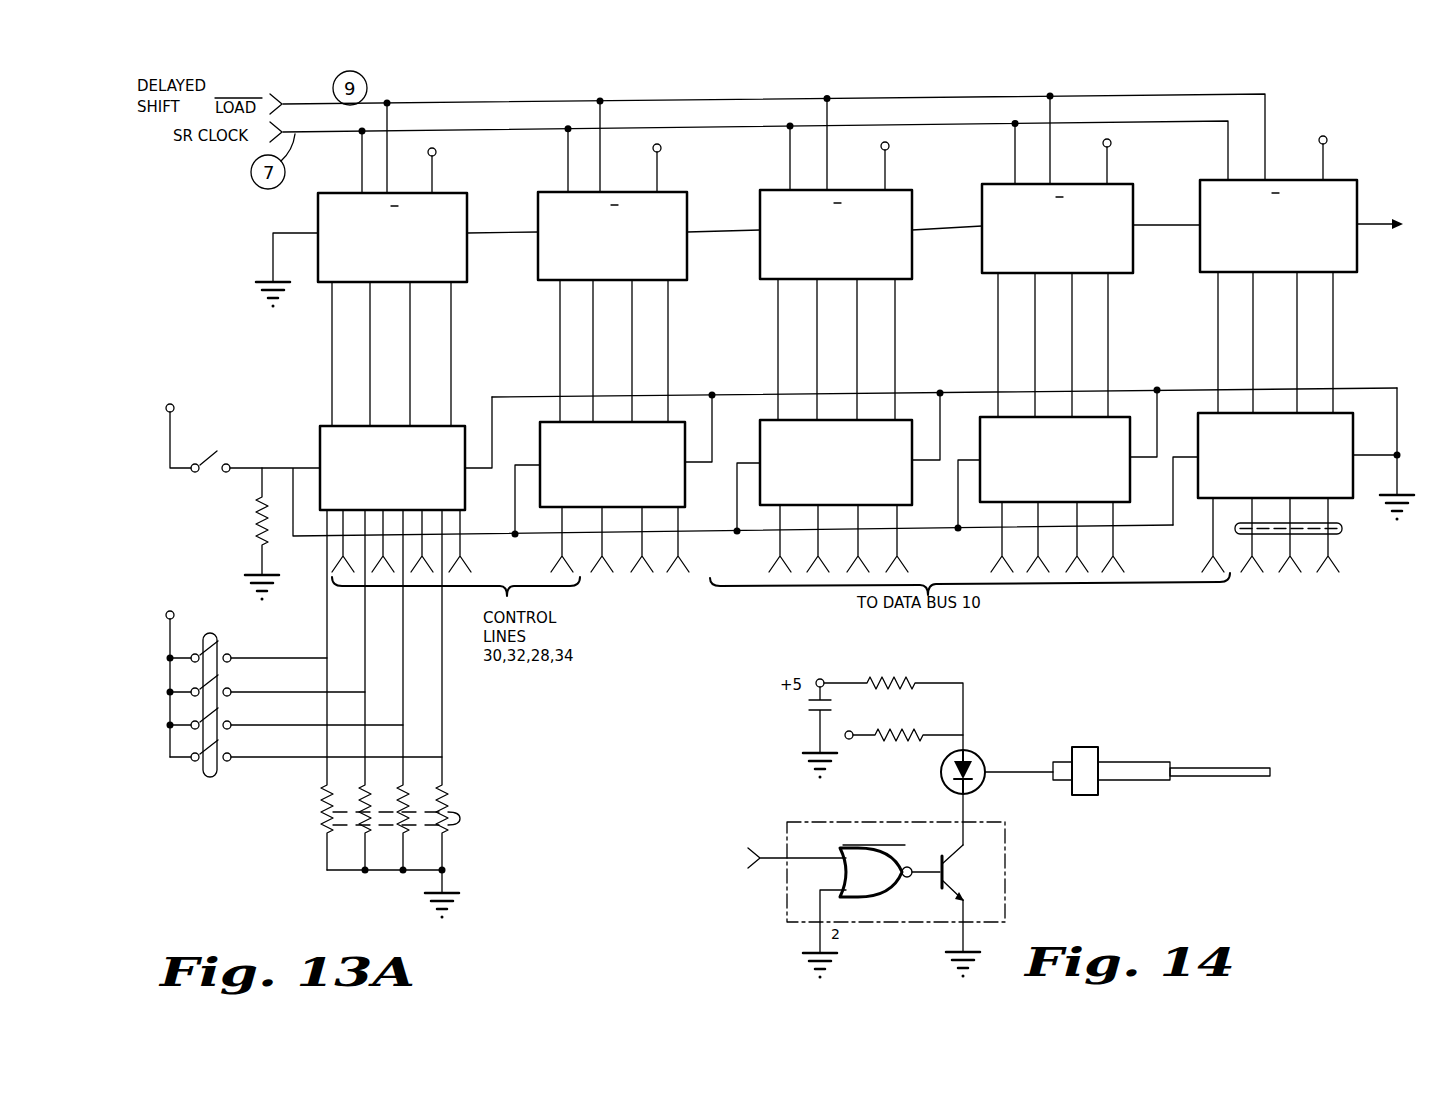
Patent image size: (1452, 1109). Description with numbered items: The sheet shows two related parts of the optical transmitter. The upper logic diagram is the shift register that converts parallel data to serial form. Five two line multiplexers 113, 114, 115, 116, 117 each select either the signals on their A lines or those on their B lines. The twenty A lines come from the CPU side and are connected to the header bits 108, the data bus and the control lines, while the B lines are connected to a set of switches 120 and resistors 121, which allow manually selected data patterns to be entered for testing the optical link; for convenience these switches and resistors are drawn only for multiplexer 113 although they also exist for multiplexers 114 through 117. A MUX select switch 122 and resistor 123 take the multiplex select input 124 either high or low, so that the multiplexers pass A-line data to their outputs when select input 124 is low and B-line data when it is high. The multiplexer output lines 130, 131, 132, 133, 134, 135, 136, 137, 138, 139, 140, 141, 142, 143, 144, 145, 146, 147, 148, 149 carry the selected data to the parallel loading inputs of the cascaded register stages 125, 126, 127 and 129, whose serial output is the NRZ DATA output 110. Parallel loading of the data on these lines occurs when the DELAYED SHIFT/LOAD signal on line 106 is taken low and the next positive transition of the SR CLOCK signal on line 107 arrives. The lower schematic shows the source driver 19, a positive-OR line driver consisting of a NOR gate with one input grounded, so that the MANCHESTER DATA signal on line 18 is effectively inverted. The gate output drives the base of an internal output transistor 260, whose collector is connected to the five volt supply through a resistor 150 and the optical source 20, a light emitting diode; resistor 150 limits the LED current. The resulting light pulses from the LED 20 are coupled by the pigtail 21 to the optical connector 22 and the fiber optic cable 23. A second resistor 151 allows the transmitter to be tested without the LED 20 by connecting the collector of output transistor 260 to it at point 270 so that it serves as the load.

In FIG. 13A, the DELAYED SHIFT/LOAD signal line 106 is at (298, 107).
In FIG. 13A, the SR CLOCK signal line 107 is at (298, 135).
In FIG. 13A, the first 74S195 shift register 125 is at (433, 191).
In FIG. 13A, the second 74S195 shift register 126 is at (658, 190).
In FIG. 13A, the third 74S195 shift register 127 is at (886, 188).
In FIG. 13A, the switches 120 is at (1108, 182).
In FIG. 13A, the fifth 74S195 shift register 129 is at (1324, 178).
In FIG. 13A, the NRZ data output 110 is at (1400, 231).
In FIG. 13A, the multiplexer output line 130 is at (332, 311).
In FIG. 13A, the multiplexer output line 131 is at (369, 345).
In FIG. 13A, the multiplexer output line 132 is at (411, 332).
In FIG. 13A, the multiplexer output line 133 is at (452, 374).
In FIG. 13A, the multiplexer output line 134 is at (560, 309).
In FIG. 13A, the multiplexer output line 135 is at (593, 343).
In FIG. 13A, the multiplexer output line 136 is at (633, 330).
In FIG. 13A, the multiplexer output line 137 is at (669, 372).
In FIG. 13A, the multiplexer output line 138 is at (778, 309).
In FIG. 13A, the multiplexer output line 139 is at (817, 343).
In FIG. 13A, the multiplexer output line 140 is at (858, 330).
In FIG. 13A, the multiplexer output line 141 is at (896, 372).
In FIG. 13A, the multiplexer output line 142 is at (998, 302).
In FIG. 13A, the multiplexer output line 143 is at (1035, 337).
In FIG. 13A, the multiplexer output line 144 is at (1073, 324).
In FIG. 13A, the multiplexer output line 145 is at (1109, 366).
In FIG. 13A, the multiplexer output line 146 is at (1218, 302).
In FIG. 13A, the multiplexer output line 147 is at (1253, 335).
In FIG. 13A, the multiplexer output line 148 is at (1298, 322).
In FIG. 13A, the multiplexer output line 149 is at (1334, 364).
In FIG. 13A, the two line multiplexer 113 is at (463, 499).
In FIG. 13A, the two line multiplexer 114 is at (683, 496).
In FIG. 13A, the two line multiplexer 115 is at (909, 494).
In FIG. 13A, the two line multiplexer 116 is at (1128, 491).
In FIG. 13A, the two line multiplexer 117 is at (1353, 486).
In FIG. 13A, the header bits 108 is at (1342, 530).
In FIG. 13A, the MUX select switch 122 is at (217, 452).
In FIG. 13A, the resistor 123 is at (268, 541).
In FIG. 13A, the multiplex select input 124 is at (311, 468).
In FIG. 13A, the resistors 121 is at (320, 816).
In FIG. 14, the resistor 150 is at (889, 683).
In FIG. 14, the resistor 151 is at (886, 735).
In FIG. 14, the point 270 is at (852, 739).
In FIG. 14, the optical source 20 is at (948, 786).
In FIG. 14, the pigtail 21 is at (1030, 770).
In FIG. 14, the optical connector 22 is at (1085, 747).
In FIG. 14, the fiber optic cable 23 is at (1187, 762).
In FIG. 14, the output transistor 260 is at (946, 872).
In FIG. 14, the source driver 19 is at (898, 923).
In FIG. 14, the MANCHESTER DATA line 18 is at (766, 868).